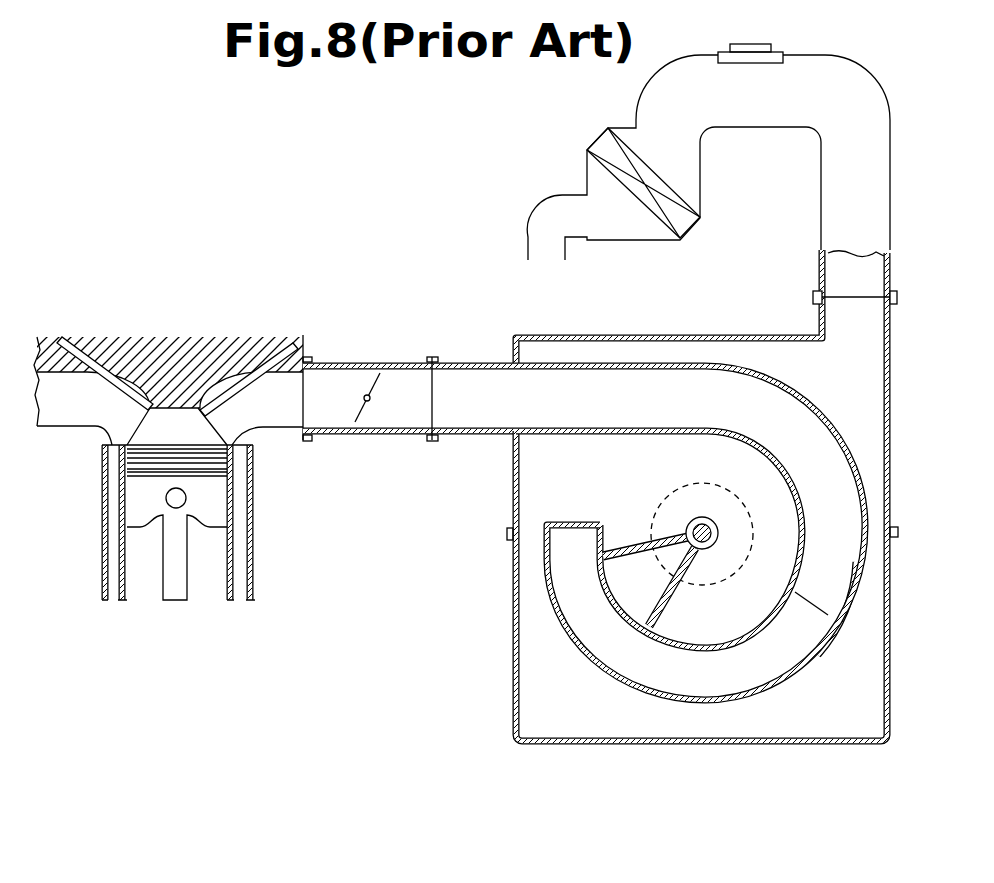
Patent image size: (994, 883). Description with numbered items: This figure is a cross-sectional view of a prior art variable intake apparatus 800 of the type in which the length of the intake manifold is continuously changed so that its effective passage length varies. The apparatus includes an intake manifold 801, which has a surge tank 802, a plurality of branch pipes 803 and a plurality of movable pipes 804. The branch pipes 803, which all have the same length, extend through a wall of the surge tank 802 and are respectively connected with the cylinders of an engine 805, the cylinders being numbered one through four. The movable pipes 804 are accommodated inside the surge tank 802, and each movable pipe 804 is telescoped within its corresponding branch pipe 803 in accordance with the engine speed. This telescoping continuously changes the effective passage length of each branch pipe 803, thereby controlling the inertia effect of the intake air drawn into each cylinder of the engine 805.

The variable intake apparatus 800 is at (925, 800).
The intake manifold 801 is at (978, 695).
The surge tank 802 is at (892, 448).
The branch pipes 803 is at (786, 382).
The movable pipes 804 is at (616, 668).
The engine 805 is at (282, 566).